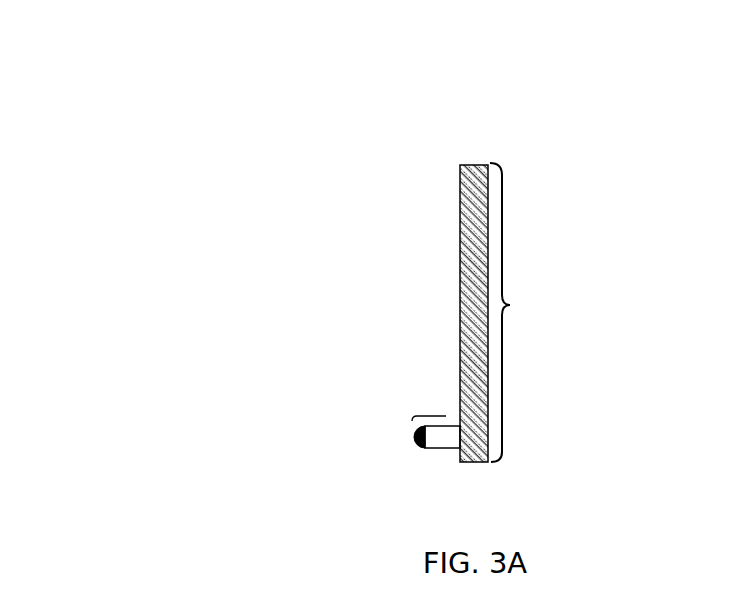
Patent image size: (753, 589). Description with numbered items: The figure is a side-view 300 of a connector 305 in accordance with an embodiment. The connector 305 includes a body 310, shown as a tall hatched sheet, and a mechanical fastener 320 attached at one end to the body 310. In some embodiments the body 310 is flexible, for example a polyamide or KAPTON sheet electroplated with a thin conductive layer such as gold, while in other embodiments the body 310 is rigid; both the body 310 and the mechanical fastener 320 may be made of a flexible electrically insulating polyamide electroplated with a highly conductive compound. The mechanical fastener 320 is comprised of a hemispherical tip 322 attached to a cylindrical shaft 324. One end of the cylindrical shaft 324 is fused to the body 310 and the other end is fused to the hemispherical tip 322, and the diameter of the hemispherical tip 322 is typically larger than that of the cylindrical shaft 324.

The side-view 300 is at (72, 30).
The connector 305 is at (466, 126).
The body 310 is at (510, 305).
The mechanical fastener 320 is at (430, 390).
The hemispherical tip 322 is at (415, 440).
The cylindrical shaft 324 is at (445, 430).